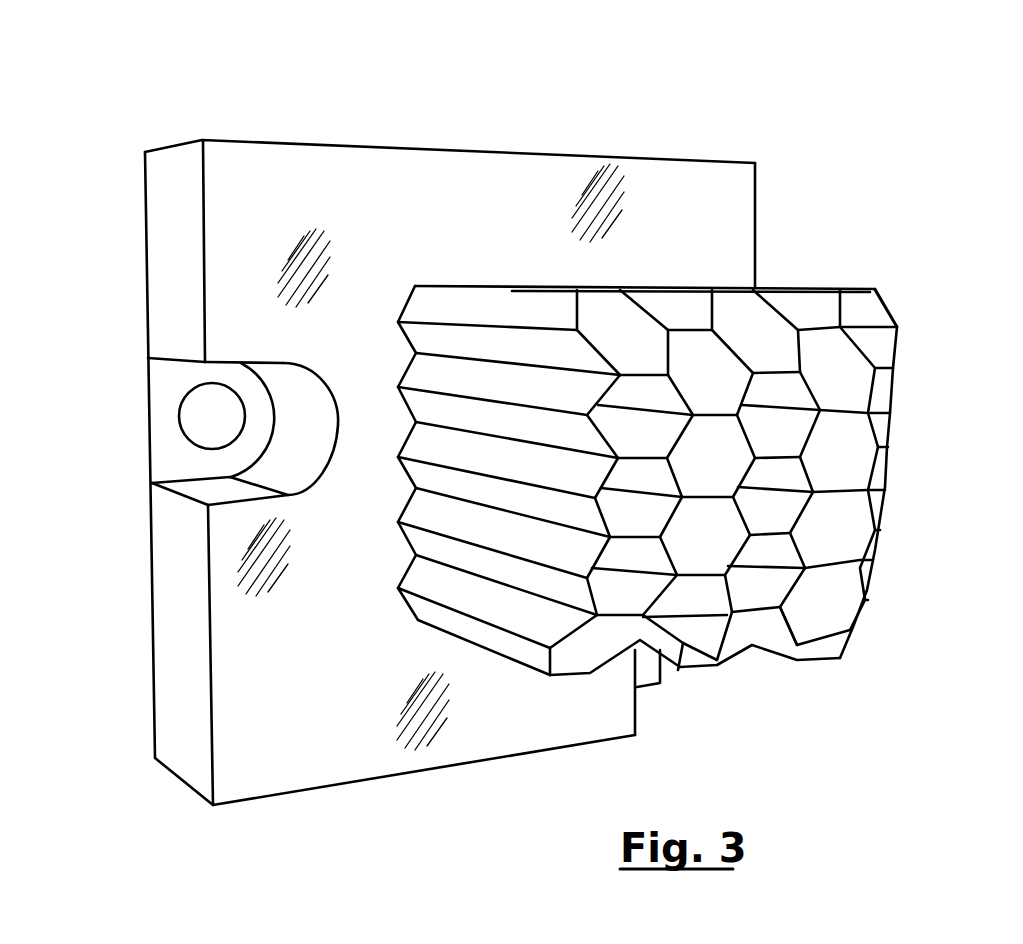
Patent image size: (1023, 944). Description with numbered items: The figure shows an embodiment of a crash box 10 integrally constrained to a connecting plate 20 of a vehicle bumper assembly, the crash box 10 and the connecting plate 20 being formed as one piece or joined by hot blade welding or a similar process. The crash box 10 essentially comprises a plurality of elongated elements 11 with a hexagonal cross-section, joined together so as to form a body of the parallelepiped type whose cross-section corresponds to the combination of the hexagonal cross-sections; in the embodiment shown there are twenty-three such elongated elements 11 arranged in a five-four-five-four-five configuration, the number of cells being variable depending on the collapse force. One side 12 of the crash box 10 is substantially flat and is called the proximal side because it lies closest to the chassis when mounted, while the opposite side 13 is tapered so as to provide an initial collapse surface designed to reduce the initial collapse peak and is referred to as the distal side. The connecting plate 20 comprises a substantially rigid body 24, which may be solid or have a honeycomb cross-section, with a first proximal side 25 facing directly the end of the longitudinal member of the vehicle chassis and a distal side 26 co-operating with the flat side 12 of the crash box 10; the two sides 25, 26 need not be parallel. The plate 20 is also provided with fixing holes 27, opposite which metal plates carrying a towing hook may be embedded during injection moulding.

The crash box 10 is at (650, 501).
The elongated element 11 is at (848, 473).
The flat side 12 is at (407, 605).
The tapered side 13 is at (754, 688).
The connecting plate 20 is at (397, 420).
The body 24 is at (310, 142).
The first proximal side 25 is at (145, 248).
The distal side 26 is at (389, 248).
The fixing holes 27 is at (180, 428).